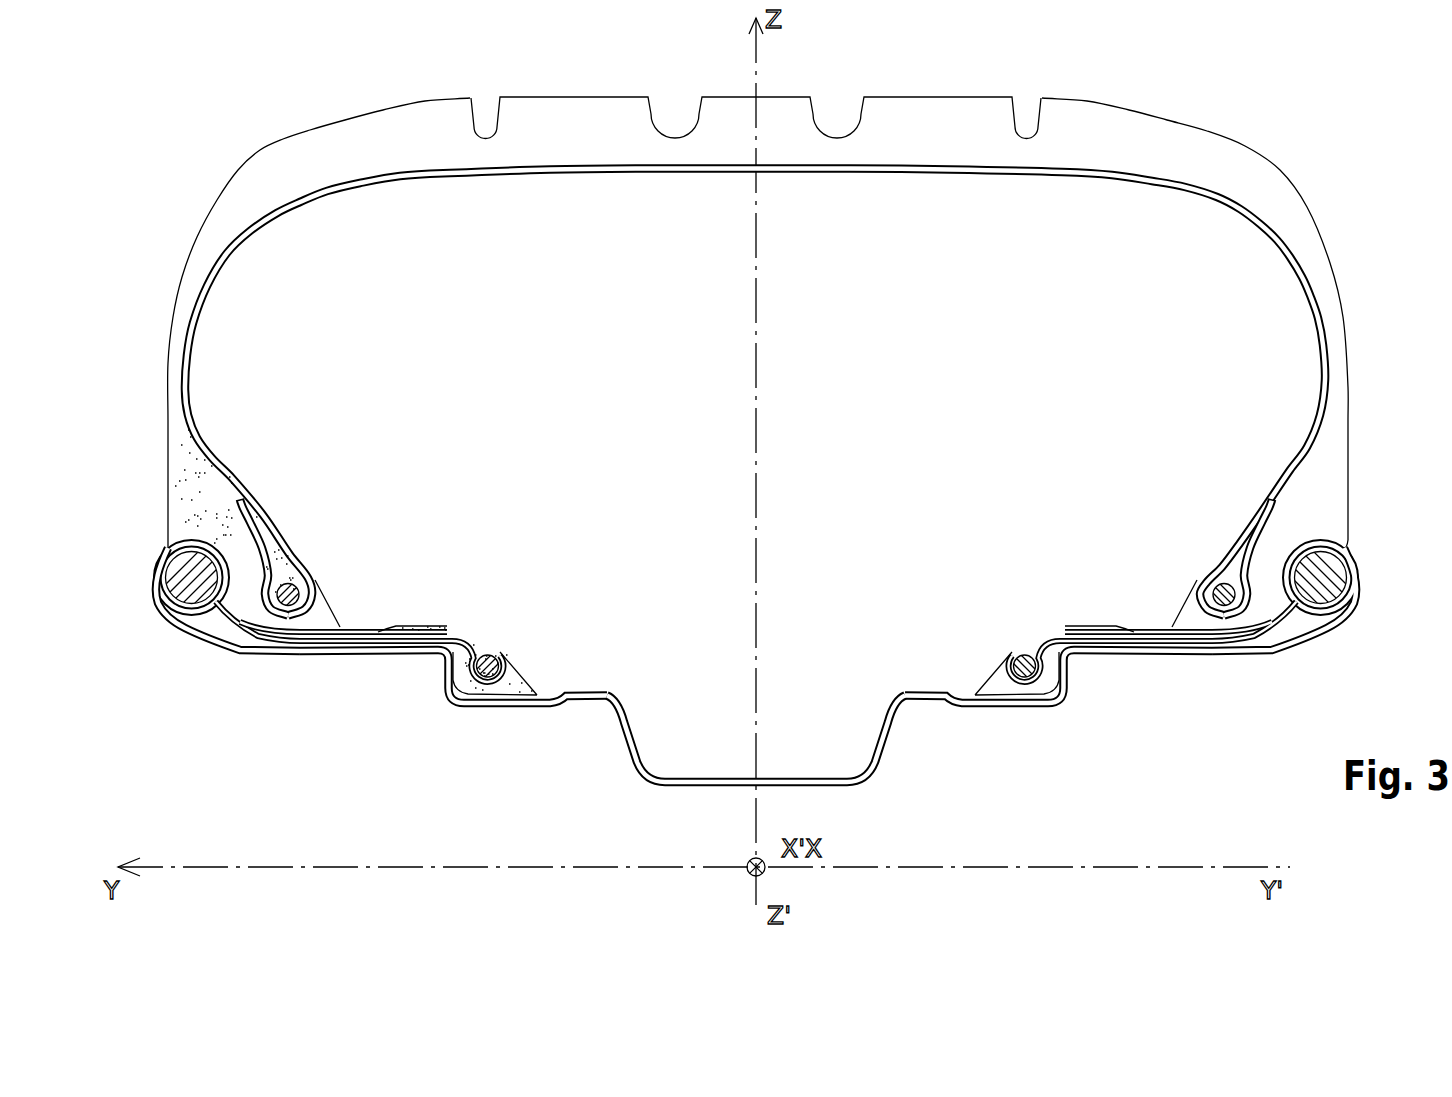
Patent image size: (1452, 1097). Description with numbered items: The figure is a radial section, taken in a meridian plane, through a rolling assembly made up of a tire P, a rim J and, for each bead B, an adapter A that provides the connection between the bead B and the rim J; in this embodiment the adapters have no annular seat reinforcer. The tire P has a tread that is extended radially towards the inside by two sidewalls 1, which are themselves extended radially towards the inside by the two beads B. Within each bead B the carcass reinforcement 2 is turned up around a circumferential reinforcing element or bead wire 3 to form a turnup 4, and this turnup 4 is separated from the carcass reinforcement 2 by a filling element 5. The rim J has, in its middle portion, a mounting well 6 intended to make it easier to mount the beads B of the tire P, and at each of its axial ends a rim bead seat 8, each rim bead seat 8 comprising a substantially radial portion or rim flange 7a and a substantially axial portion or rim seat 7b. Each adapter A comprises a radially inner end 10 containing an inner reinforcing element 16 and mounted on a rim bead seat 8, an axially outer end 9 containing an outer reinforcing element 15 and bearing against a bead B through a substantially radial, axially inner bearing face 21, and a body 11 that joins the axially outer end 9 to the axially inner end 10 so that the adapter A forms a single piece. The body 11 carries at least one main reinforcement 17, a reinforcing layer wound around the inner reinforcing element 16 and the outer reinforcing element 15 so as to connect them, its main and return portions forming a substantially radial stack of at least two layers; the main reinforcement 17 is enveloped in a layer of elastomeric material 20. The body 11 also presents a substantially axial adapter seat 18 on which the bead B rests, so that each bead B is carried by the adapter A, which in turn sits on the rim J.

The sidewall 1 is at (168, 388).
The carcass reinforcement 2 is at (230, 470).
The bead wire 3 is at (293, 591).
The turnup 4 is at (237, 510).
The filling element 5 is at (281, 560).
The mounting well 6 is at (794, 777).
The rim flange 7a is at (444, 678).
The rim seat 7b is at (510, 707).
The rim bead seat 8 is at (463, 705).
The axially outer end 9 is at (157, 610).
The axially inner end 10 is at (541, 692).
The body 11 is at (367, 628).
The outer reinforcing element 15 is at (192, 578).
The inner reinforcing element 16 is at (492, 660).
The main reinforcement 17 is at (320, 645).
The adapter seat 18 is at (287, 635).
The layer of elastomeric material 20 is at (257, 652).
The bearing face 21 is at (272, 557).
The adapter A is at (377, 686).
The bead B is at (344, 592).
The rim J is at (518, 746).
The tire P is at (378, 72).